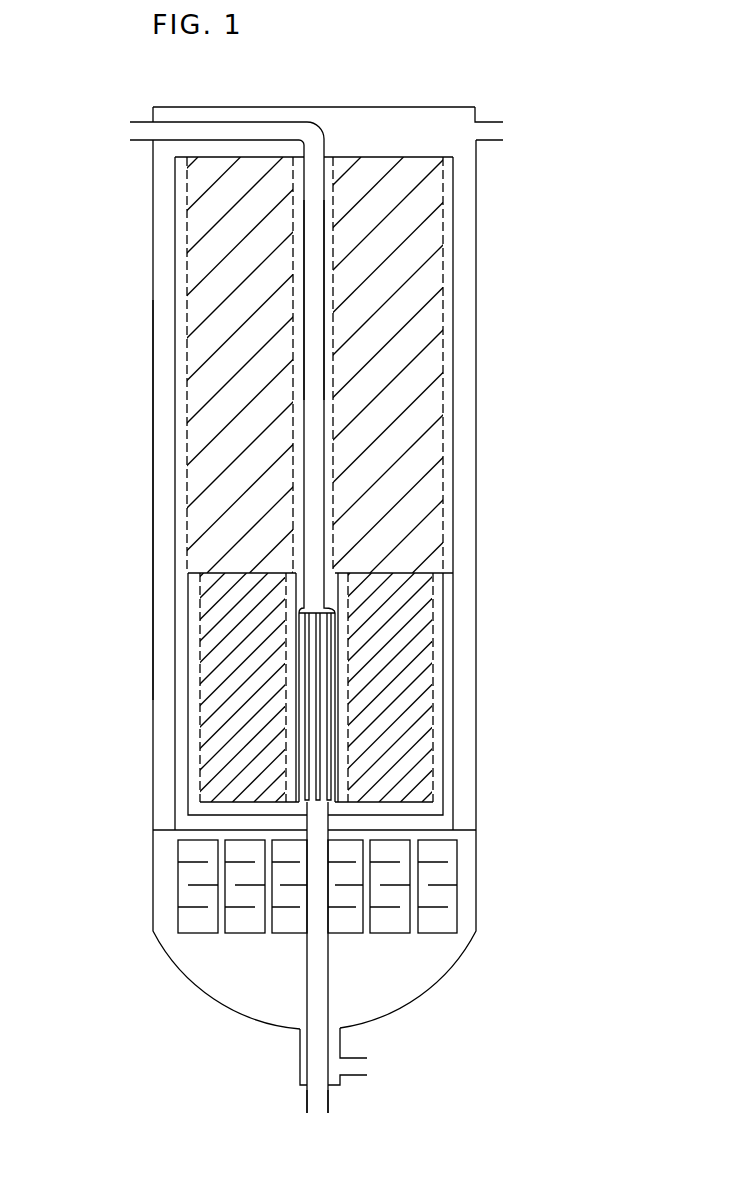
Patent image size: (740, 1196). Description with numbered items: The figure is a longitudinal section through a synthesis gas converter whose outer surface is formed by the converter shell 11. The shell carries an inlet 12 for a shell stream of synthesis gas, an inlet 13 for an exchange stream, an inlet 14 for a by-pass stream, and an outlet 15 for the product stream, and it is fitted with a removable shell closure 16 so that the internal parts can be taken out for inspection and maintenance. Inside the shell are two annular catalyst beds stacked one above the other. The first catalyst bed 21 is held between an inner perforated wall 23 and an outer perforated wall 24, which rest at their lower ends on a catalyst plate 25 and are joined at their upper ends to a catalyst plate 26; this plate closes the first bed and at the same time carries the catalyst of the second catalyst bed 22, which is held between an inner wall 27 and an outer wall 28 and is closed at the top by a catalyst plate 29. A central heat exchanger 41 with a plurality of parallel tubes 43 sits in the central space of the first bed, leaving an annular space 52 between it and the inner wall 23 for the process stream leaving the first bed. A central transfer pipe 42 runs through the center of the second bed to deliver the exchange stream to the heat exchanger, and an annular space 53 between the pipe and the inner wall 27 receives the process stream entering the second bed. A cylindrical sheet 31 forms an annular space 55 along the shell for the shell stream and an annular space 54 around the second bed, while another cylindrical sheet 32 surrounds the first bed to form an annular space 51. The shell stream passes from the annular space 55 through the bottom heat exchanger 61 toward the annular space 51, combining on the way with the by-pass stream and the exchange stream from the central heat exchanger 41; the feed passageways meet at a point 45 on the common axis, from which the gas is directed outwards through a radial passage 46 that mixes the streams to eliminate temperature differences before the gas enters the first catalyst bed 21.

The converter shell 11 is at (478, 256).
The inlet 12 is at (532, 114).
The inlet 13 is at (134, 125).
The inlet 14 is at (330, 1100).
The outlet 15 is at (444, 1053).
The removable shell closure 16 is at (414, 106).
The first catalyst bed 21 is at (238, 613).
The second catalyst bed 22 is at (245, 210).
The inner wall 23 is at (352, 692).
The outer wall 24 is at (436, 742).
The catalyst plate 25 is at (394, 783).
The catalyst plate 26 is at (462, 552).
The inner wall 27 is at (336, 347).
The outer wall 28 is at (445, 408).
The catalyst plate 29 is at (423, 155).
The cylindrical sheet 31 is at (176, 532).
The cylindrical sheet 32 is at (189, 661).
The central heat exchanger 41 is at (340, 625).
The central transfer pipe 42 is at (313, 292).
The parallel tubes 43 is at (313, 660).
The point 45 is at (448, 957).
The radial passage 46 is at (179, 824).
The annular space 51 is at (196, 742).
The annular space 52 is at (291, 706).
The annular space 53 is at (300, 420).
The annular space 54 is at (188, 375).
The annular space 55 is at (163, 483).
The bottom heat exchanger 61 is at (441, 873).